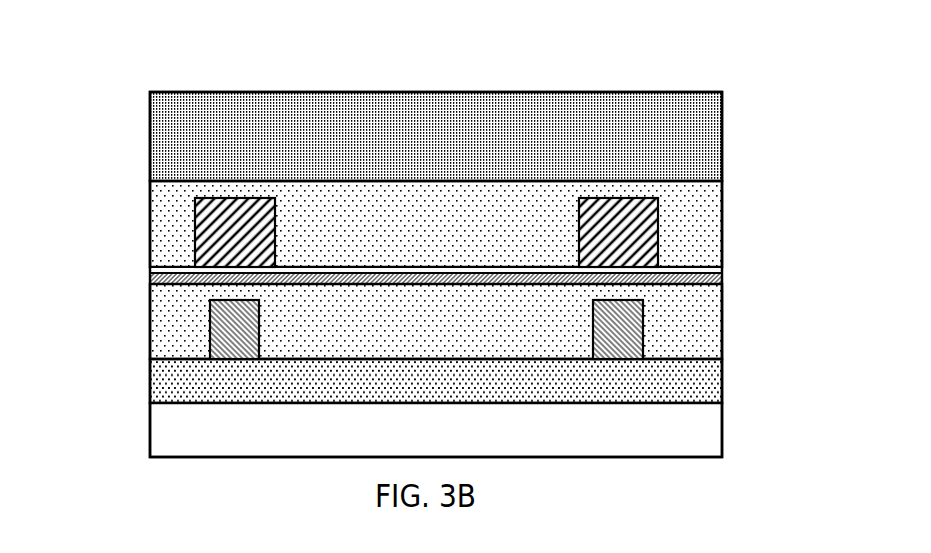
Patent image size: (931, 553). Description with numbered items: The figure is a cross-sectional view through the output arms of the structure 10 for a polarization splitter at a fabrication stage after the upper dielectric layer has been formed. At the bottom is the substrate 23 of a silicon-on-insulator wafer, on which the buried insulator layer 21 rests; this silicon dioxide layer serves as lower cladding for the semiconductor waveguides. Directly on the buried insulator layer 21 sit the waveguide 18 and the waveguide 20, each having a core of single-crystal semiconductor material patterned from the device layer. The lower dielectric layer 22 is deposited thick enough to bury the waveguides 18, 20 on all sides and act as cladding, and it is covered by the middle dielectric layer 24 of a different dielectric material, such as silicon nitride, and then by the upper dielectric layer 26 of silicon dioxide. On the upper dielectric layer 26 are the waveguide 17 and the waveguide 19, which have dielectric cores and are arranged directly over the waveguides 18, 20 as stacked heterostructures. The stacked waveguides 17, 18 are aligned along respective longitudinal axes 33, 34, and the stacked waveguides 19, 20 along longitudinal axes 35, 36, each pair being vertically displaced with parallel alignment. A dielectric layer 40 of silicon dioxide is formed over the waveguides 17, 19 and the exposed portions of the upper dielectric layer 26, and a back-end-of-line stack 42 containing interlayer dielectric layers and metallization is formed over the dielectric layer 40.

The structure 10 is at (127, 59).
The waveguide 17 is at (144, 229).
The waveguide 18 is at (136, 325).
The waveguide 19 is at (709, 229).
The waveguide 20 is at (724, 326).
The buried insulator layer 21 is at (165, 375).
The lower dielectric layer 22 is at (165, 345).
The substrate 23 is at (165, 429).
The middle dielectric layer 24 is at (710, 277).
The upper dielectric layer 26 is at (160, 269).
The longitudinal axis 33 is at (235, 232).
The longitudinal axis 34 is at (233, 329).
The longitudinal axis 35 is at (618, 228).
The longitudinal axis 36 is at (617, 328).
The dielectric layer 40 is at (163, 192).
The back-end-of-line stack 42 is at (163, 135).